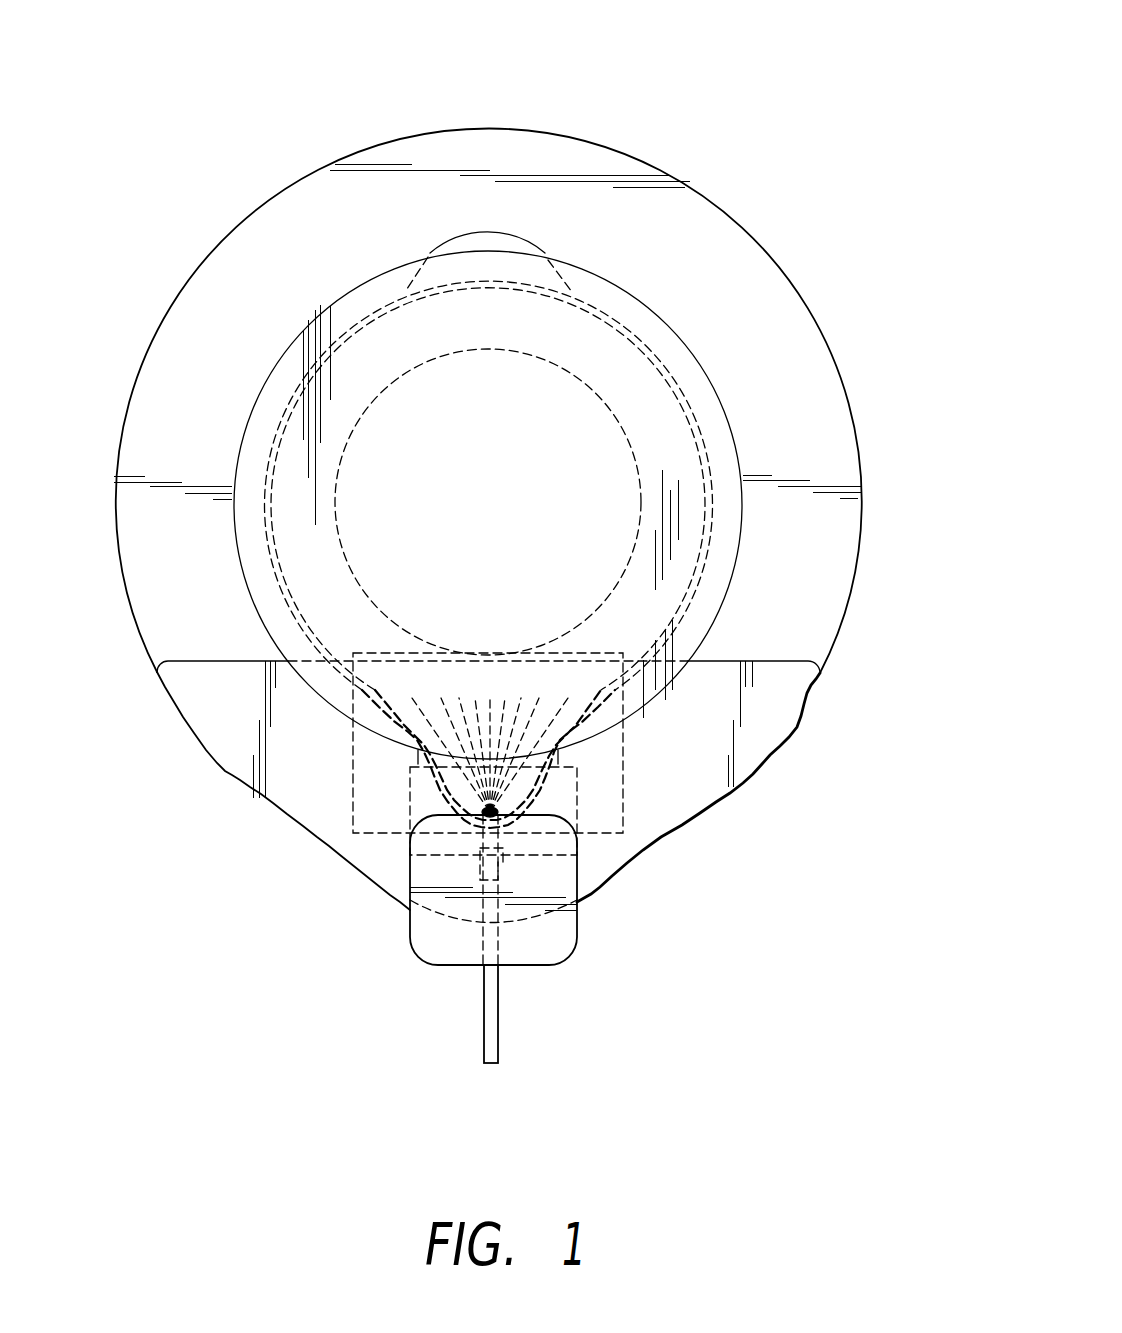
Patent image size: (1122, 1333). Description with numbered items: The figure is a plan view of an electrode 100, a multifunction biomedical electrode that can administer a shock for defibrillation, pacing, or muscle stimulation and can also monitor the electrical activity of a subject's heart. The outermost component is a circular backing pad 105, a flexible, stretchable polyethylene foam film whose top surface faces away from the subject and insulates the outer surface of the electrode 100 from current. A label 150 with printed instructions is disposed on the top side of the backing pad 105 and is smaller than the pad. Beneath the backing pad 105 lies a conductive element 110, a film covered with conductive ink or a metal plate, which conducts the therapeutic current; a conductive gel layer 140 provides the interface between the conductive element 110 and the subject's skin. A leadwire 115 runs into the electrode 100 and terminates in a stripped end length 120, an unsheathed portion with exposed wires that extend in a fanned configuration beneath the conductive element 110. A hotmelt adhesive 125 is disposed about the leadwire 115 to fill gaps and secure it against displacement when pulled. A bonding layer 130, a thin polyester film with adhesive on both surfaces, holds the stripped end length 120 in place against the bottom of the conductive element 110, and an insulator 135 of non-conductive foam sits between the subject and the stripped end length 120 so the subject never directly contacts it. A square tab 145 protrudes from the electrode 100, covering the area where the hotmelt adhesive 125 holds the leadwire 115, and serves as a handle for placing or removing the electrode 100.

The electrode 100 is at (652, 67).
The backing pad 105 is at (250, 218).
The conductive element 110 is at (590, 297).
The leadwire 115 is at (484, 1032).
The stripped end length 120 is at (587, 723).
The hotmelt adhesive 125 is at (505, 862).
The bonding layer 130 is at (598, 832).
The insulator 135 is at (207, 661).
The conductive gel layer 140 is at (256, 397).
The tab 145 is at (409, 925).
The label 150 is at (618, 426).